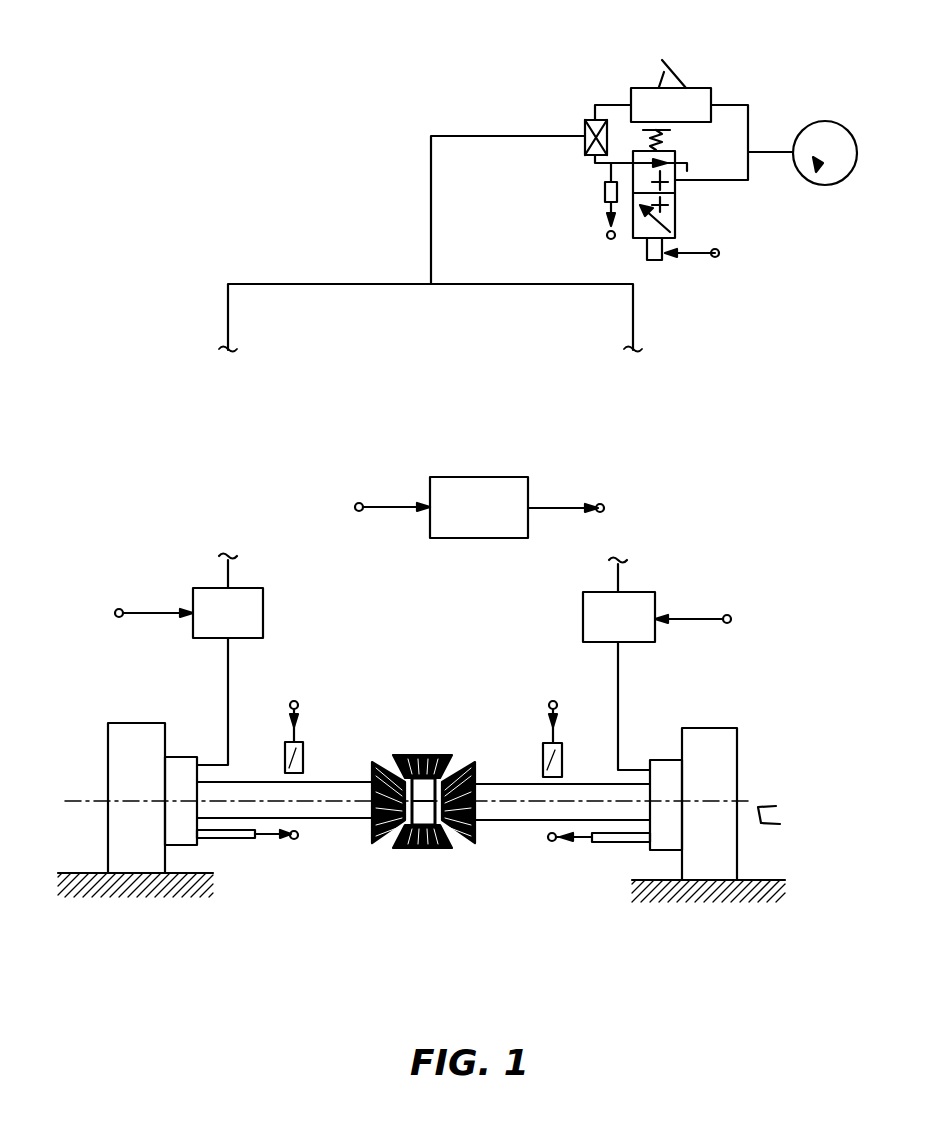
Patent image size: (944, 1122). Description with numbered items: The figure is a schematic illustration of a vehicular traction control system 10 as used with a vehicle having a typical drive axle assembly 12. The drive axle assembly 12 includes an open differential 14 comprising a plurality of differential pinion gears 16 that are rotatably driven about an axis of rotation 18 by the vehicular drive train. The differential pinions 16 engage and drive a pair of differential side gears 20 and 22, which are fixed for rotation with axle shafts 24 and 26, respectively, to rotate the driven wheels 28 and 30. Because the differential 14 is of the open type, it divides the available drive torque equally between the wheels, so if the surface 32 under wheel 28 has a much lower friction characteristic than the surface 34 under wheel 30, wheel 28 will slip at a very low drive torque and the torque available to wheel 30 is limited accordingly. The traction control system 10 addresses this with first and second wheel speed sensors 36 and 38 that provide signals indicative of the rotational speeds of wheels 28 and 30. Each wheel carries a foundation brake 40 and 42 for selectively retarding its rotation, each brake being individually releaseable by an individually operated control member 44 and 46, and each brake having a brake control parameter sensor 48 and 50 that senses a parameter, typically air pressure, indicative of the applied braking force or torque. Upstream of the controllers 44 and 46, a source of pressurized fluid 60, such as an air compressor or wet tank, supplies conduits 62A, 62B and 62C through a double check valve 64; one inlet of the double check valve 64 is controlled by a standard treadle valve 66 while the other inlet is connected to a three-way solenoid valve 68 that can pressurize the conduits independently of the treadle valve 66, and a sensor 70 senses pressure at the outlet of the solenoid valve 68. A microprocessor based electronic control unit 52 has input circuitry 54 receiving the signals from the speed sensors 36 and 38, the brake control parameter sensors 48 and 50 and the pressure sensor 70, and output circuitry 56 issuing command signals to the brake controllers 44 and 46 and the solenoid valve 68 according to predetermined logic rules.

The vehicular traction control system 10 is at (446, 787).
The drive axle assembly 12 is at (446, 842).
The open differential 14 is at (413, 789).
The differential pinion gears 16 is at (420, 847).
The axis of rotation 18 is at (442, 817).
The differential side gear 20 is at (455, 765).
The differential side gear 22 is at (377, 765).
The axle shaft 24 is at (510, 810).
The axle shaft 26 is at (328, 812).
The driven wheel 28 is at (717, 767).
The driven wheel 30 is at (132, 740).
The surface 32 is at (765, 880).
The surface 34 is at (92, 873).
The first wheel speed sensor 36 is at (563, 750).
The second wheel speed sensor 38 is at (288, 743).
The foundation brake 40 is at (665, 772).
The foundation brake 42 is at (183, 772).
The control member 44 is at (598, 610).
The control member 46 is at (250, 622).
The brake control parameter sensor 48 is at (608, 840).
The brake control parameter sensor 50 is at (223, 837).
The control unit 52 is at (493, 460).
The input circuitry 54 is at (392, 485).
The output circuitry 56 is at (568, 485).
The source of pressurized fluid 60 is at (815, 135).
The conduit 62A is at (431, 182).
The conduit 62B is at (337, 283).
The conduit 62C is at (547, 283).
The double check valve 64 is at (585, 122).
The treadle valve 66 is at (695, 98).
The three-way solenoid valve 68 is at (684, 217).
The sensor 70 is at (605, 192).